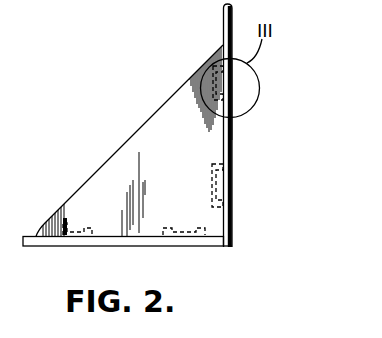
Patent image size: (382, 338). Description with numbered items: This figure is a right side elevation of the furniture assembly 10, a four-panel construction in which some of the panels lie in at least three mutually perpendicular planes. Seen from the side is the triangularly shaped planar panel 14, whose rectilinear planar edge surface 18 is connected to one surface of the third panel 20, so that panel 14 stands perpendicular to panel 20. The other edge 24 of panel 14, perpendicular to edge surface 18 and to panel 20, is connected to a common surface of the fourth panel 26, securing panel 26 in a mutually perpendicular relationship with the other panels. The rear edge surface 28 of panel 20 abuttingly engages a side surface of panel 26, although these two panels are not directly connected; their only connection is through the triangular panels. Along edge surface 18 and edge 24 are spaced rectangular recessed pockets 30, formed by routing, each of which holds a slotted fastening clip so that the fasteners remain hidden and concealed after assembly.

The furniture assembly 10 is at (160, 72).
The triangularly shaped planar panel 14 is at (168, 149).
The edge surface 18 is at (104, 238).
The third panel 20 is at (55, 246).
The edge 24 is at (228, 153).
The fourth panel 26 is at (233, 131).
The rear edge surface 28 is at (226, 248).
The recessed pocket 30 is at (218, 84).